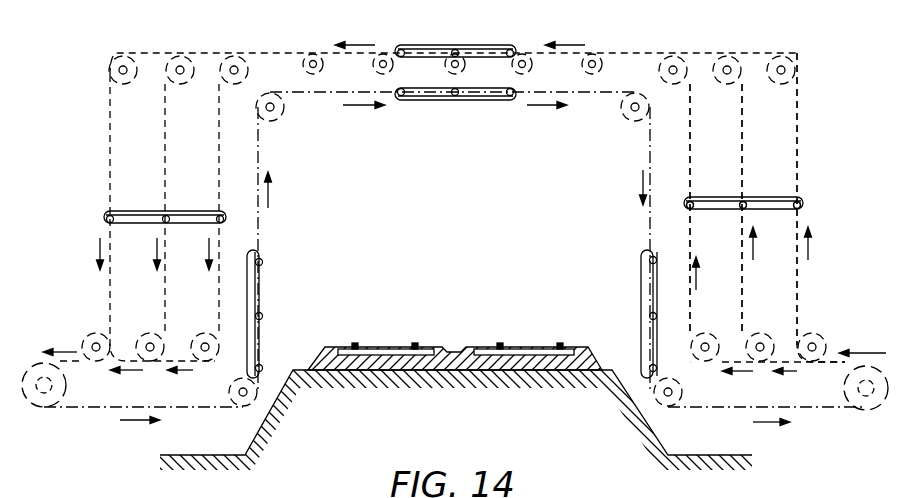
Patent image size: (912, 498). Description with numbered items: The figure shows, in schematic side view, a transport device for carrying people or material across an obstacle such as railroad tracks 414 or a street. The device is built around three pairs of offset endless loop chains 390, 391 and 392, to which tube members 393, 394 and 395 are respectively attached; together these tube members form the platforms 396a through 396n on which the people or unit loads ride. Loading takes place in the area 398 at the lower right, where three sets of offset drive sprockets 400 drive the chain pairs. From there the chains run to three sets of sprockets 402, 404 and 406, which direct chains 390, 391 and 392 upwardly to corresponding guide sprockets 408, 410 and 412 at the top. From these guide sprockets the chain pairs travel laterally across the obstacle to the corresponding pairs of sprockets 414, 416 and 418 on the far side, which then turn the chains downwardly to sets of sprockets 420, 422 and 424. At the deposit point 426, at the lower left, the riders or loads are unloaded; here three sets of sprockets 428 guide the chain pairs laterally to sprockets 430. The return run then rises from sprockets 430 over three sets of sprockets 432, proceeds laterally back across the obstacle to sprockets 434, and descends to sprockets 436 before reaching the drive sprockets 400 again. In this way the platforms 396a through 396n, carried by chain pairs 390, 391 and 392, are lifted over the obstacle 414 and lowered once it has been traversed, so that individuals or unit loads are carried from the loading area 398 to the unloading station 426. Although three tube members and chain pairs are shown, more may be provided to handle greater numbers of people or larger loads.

The endless loop chain 390 is at (690, 119).
The endless loop chain 391 is at (745, 165).
The endless loop chain 392 is at (797, 142).
The tube member 393 is at (685, 214).
The tube member 394 is at (740, 209).
The tube member 395 is at (805, 210).
The platform 396a is at (770, 197).
The platform 396n is at (645, 289).
The loading area 398 is at (890, 348).
The drive sprockets 400 is at (866, 410).
The sprockets 402 is at (707, 333).
The sprockets 404 is at (762, 333).
The sprockets 406 is at (819, 333).
The guide sprockets 408 is at (672, 57).
The guide sprockets 410 is at (726, 57).
The guide sprockets 412 is at (780, 57).
The sprockets 414 is at (124, 57).
The sprockets 416 is at (181, 57).
The sprockets 418 is at (232, 57).
The sprockets 420 is at (98, 333).
The sprockets 422 is at (147, 333).
The sprockets 424 is at (203, 333).
The deposit point 426 is at (54, 336).
The sprockets 428 is at (44, 408).
The sprockets 430 is at (246, 408).
The sprockets 432 is at (279, 116).
The sprockets 434 is at (628, 116).
The sprockets 436 is at (670, 406).